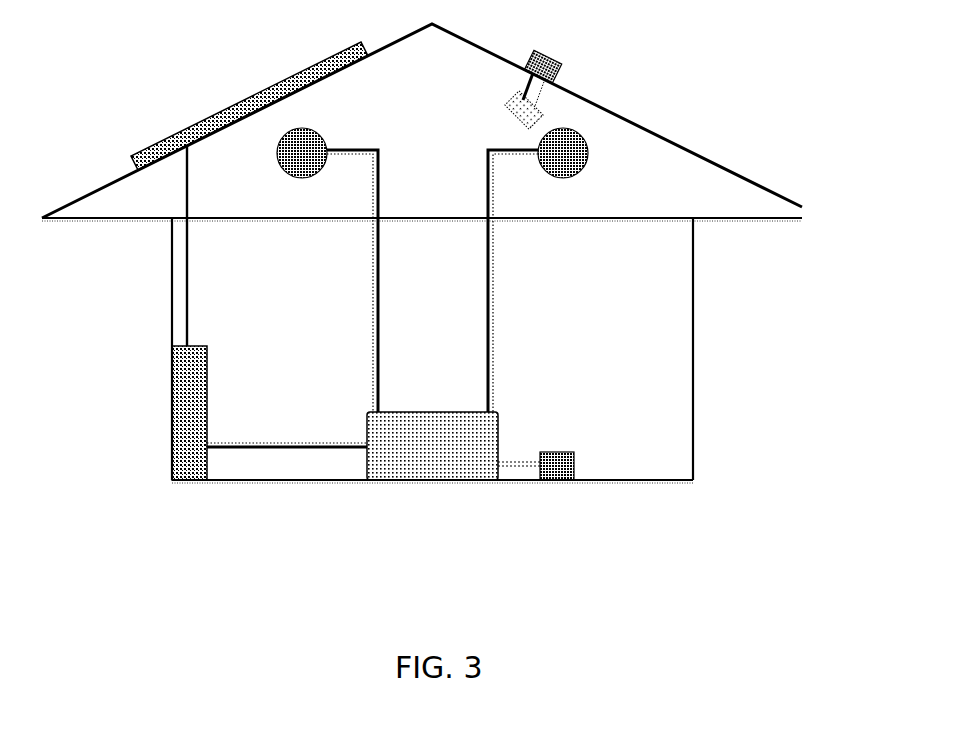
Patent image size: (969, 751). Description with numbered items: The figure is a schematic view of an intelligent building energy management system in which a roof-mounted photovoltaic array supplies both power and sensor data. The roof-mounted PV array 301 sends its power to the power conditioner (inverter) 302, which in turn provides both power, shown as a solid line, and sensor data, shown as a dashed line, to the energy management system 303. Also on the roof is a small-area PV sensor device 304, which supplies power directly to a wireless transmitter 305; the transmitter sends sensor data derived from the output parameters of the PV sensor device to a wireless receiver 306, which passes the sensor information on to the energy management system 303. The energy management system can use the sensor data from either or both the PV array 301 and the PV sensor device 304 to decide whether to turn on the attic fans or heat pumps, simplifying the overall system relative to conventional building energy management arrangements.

The roof-mounted PV array 301 is at (148, 146).
The power conditioner (inverter) 302 is at (208, 365).
The energy management system 303 is at (432, 412).
The roof-mounted small-area PV sensor device 304 is at (565, 67).
The wireless transmitter 305 is at (507, 112).
The wireless receiver 306 is at (558, 452).